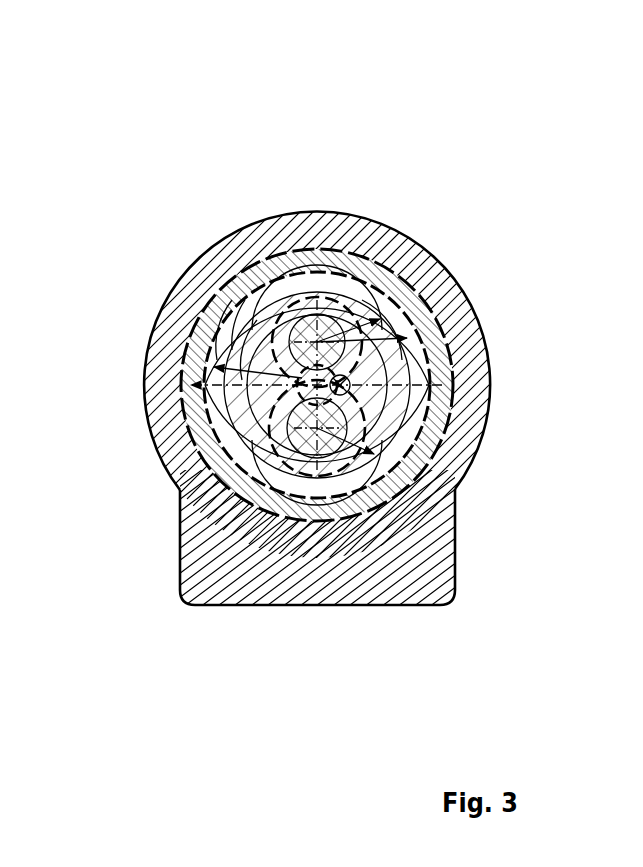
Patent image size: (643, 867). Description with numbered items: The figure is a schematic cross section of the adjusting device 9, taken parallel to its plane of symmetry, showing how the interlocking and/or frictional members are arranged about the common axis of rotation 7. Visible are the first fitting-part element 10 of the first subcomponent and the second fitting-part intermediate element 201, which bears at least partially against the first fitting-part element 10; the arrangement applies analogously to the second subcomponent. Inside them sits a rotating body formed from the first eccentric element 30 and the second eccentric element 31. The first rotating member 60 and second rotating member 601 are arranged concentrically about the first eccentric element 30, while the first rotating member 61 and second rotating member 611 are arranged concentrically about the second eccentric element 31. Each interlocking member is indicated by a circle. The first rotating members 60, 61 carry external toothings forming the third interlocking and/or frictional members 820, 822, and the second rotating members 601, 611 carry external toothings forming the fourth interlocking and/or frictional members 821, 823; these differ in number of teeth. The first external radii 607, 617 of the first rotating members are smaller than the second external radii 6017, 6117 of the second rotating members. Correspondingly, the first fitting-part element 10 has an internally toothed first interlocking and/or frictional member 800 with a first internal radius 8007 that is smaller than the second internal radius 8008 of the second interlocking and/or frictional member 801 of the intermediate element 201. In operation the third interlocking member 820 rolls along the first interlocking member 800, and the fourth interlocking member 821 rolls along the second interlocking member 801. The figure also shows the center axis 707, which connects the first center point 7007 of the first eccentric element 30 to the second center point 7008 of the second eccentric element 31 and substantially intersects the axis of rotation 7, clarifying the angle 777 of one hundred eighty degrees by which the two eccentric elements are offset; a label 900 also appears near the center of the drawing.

The adjusting device 9 is at (272, 144).
The second center point 7008 is at (265, 330).
The first rotating member 61 is at (286, 300).
The center axis 707 is at (348, 300).
The second eccentric element 31 is at (352, 295).
The first external radius 617 is at (385, 275).
The second external radius 6117 is at (400, 290).
The first fitting-part element 10 is at (437, 340).
The first interlocking and/or frictional member 800 is at (432, 362).
The second interlocking and/or frictional member 801 is at (427, 477).
The third interlocking and/or frictional member 820 is at (252, 425).
The fourth interlocking and/or frictional member 821 is at (258, 490).
The second rotating member 601 is at (238, 448).
The first rotating member 60 is at (265, 478).
The first eccentric element 30 is at (280, 483).
The second fitting-part intermediate element 201 is at (432, 562).
The first center point 7007 is at (307, 470).
The first external radius 607 is at (318, 440).
The second external radius 6017 is at (355, 462).
The third interlocking and/or frictional member 822 is at (245, 320).
The second rotating member 611 is at (265, 325).
The fourth interlocking and/or frictional member 823 is at (235, 338).
The first internal radius 8007 is at (222, 355).
The second internal radius 8008 is at (200, 360).
The angle 777 is at (347, 410).
The axis of rotation 7 is at (364, 403).
The eccentricity 900 is at (290, 305).